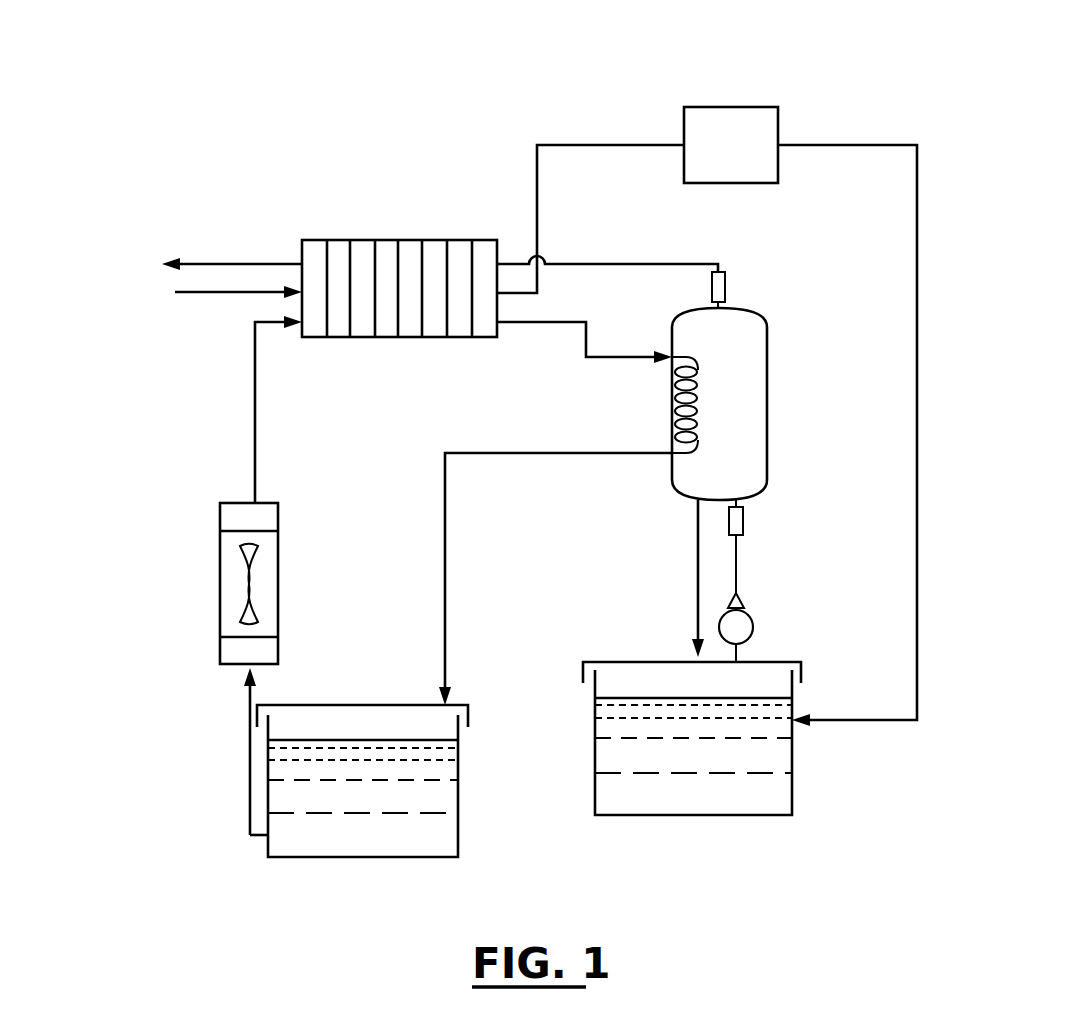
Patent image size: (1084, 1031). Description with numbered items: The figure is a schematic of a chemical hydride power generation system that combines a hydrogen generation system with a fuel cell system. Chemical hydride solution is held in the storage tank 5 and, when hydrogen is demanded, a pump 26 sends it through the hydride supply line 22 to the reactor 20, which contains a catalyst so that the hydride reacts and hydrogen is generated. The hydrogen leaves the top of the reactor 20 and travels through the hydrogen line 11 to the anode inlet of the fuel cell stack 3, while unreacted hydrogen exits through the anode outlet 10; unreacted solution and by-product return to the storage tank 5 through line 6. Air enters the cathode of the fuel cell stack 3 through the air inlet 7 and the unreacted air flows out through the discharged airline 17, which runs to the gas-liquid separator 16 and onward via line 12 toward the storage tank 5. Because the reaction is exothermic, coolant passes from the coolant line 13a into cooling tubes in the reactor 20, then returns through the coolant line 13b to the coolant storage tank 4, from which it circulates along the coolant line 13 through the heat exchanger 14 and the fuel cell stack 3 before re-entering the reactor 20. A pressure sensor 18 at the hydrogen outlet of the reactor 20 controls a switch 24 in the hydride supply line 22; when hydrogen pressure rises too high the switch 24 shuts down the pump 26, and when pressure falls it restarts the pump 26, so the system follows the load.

The fuel cell stack 3 is at (395, 338).
The coolant storage tank 4 is at (447, 836).
The chemical hydride storage tank 5 is at (780, 795).
The line 6 is at (698, 533).
The air inlet 7 is at (183, 292).
The anode outlet 10 is at (197, 263).
The hydrogen line 11 is at (628, 264).
The line 12 is at (917, 423).
The coolant line 13 is at (255, 462).
The coolant line 13a is at (598, 360).
The coolant line 13b is at (445, 525).
The heat exchanger 14 is at (220, 593).
The gas-liquid separator 16 is at (735, 107).
The discharged airline 17 is at (537, 172).
The pressure sensor 18 is at (726, 288).
The reactor 20 is at (743, 419).
The hydride supply line 22 is at (740, 578).
The switch 24 is at (744, 520).
The pump 26 is at (753, 625).